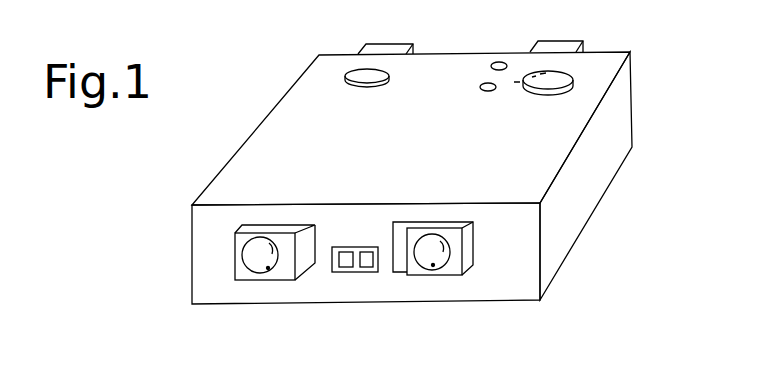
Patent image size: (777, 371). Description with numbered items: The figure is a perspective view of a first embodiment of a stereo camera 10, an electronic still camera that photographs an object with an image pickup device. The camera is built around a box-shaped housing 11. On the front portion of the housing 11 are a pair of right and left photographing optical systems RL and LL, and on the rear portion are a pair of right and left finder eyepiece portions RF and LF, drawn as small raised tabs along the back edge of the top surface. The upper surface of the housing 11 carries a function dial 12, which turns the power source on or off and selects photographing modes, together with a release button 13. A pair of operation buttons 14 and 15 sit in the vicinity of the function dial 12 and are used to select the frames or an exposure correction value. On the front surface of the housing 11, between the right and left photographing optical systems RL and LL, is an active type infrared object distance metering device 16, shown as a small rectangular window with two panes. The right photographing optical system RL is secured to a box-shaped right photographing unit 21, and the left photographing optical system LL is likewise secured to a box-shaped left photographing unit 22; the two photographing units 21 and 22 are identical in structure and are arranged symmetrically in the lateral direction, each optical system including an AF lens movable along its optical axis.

The stereo camera 10 is at (275, 34).
The housing 11 is at (240, 155).
The function dial 12 is at (562, 78).
The release button 13 is at (345, 75).
The operation button 14 is at (485, 84).
The operation button 15 is at (502, 62).
The active type infrared object distance metering device 16 is at (355, 272).
The right photographing unit 21 is at (242, 273).
The left photographing unit 22 is at (458, 270).
The right finder eyepiece portion RF is at (413, 53).
The left finder eyepiece portion LF is at (584, 50).
The right photographing optical system RL is at (260, 270).
The left photographing optical system LL is at (422, 262).